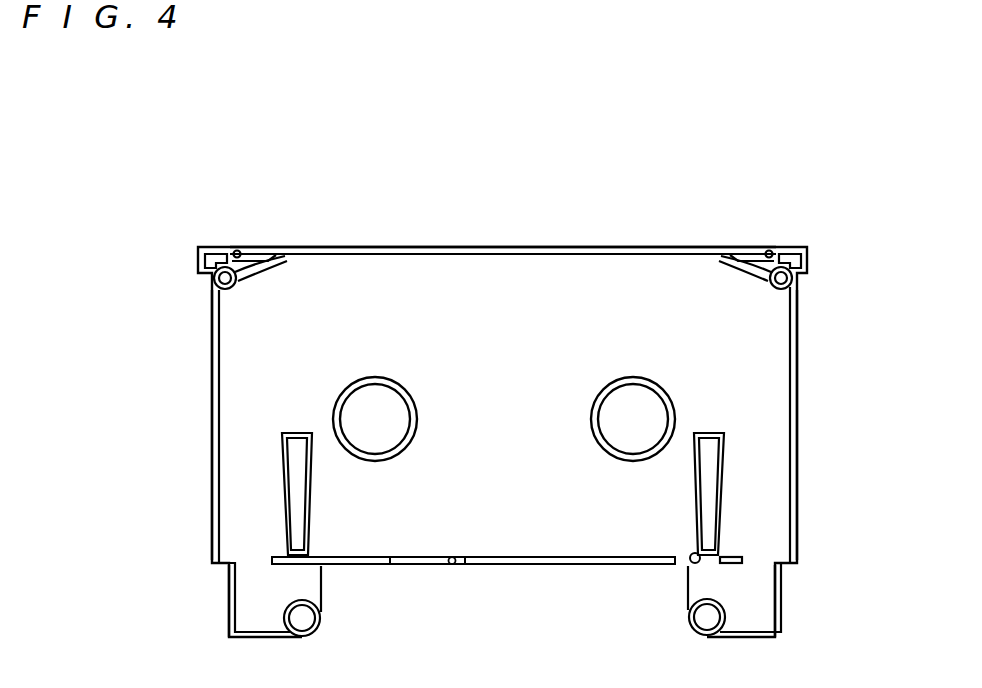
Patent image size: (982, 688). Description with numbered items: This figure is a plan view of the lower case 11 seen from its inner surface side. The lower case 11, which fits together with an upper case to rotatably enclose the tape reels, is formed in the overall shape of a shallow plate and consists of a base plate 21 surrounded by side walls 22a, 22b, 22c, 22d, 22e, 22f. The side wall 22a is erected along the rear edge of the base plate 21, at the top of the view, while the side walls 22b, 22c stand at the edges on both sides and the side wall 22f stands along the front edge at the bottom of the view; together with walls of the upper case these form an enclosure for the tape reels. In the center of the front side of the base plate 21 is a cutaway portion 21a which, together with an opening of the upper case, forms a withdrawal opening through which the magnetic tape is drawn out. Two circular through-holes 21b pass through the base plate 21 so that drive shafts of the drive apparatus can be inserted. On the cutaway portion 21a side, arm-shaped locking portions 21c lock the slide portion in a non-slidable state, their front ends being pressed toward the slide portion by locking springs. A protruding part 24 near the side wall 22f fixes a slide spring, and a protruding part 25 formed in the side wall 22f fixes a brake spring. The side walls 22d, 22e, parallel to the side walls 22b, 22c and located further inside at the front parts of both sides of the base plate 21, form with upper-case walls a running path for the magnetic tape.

The lower case 11 is at (411, 212).
The base plate 21 is at (697, 284).
The cutaway portion 21a is at (573, 590).
The circular through-hole 21b is at (375, 406).
The locking portion 21c is at (296, 497).
The side wall 22a is at (475, 252).
The side wall 22b is at (212, 378).
The side wall 22c is at (797, 380).
The side wall 22d is at (229, 630).
The side wall 22e is at (777, 628).
The side wall 22f is at (513, 566).
The protruding part 24 is at (690, 564).
The protruding part 25 is at (452, 557).